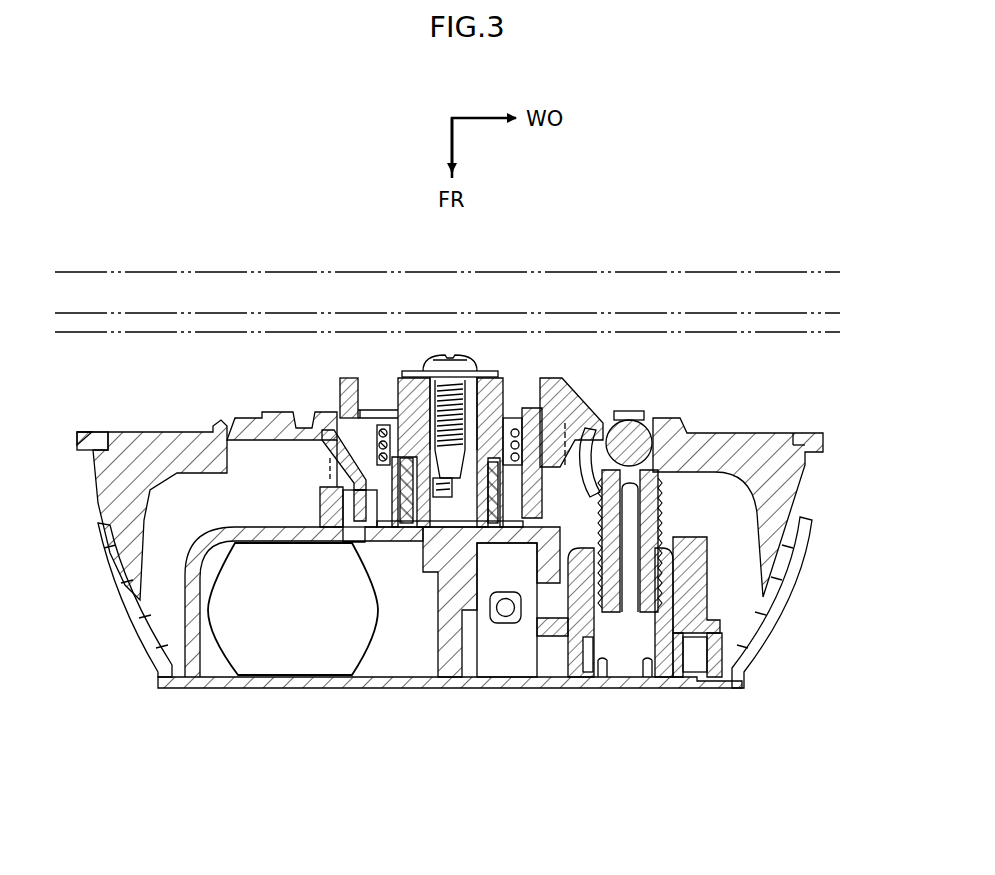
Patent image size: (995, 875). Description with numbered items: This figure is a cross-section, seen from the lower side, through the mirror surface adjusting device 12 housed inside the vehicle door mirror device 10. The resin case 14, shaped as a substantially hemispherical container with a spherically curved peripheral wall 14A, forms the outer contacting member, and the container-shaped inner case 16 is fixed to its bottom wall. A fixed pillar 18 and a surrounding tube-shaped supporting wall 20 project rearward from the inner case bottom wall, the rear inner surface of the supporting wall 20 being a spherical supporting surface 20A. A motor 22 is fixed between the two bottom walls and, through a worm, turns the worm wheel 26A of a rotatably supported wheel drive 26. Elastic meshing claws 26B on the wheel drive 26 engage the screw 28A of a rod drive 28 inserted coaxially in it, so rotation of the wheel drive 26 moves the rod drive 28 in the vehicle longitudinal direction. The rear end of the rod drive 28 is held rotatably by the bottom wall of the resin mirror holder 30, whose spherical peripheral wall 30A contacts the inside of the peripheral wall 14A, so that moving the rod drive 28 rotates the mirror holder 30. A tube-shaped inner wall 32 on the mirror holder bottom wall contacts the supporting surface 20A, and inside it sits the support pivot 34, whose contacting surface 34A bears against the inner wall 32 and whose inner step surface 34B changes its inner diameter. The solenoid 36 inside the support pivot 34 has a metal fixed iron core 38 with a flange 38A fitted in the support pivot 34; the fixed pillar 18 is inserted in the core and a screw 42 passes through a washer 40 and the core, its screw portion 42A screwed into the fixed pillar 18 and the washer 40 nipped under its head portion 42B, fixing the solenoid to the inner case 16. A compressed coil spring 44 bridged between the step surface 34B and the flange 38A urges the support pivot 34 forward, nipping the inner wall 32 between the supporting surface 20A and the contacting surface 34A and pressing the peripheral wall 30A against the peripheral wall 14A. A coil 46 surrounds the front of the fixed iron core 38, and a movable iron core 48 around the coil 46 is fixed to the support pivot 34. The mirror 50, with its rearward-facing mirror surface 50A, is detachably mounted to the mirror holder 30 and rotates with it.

The vehicle door mirror device 10 is at (245, 152).
The mirror surface adjusting device 12 is at (95, 396).
The case 14 is at (504, 690).
The peripheral wall 14A is at (117, 611).
The inner case 16 is at (208, 530).
The fixed pillar 18 is at (427, 402).
The supporting wall 20 is at (586, 430).
The supporting surface 20A is at (330, 472).
The motor 22 is at (376, 633).
The wheel drive 26 is at (710, 572).
The worm wheel 26A is at (534, 615).
The meshing claw 26B is at (660, 542).
The rod drive 28 is at (687, 427).
The screw 28A is at (652, 512).
The mirror holder 30 is at (152, 428).
The peripheral wall 30A is at (806, 480).
The inner wall 32 is at (300, 410).
The support pivot 34 is at (560, 390).
The contacting surface 34A is at (352, 478).
The step surface 34B is at (326, 458).
The solenoid 36 is at (390, 370).
The fixed iron core 38 is at (508, 372).
The flange 38A is at (352, 408).
The washer 40 is at (420, 370).
The screw 42 is at (430, 356).
The screw portion 42A is at (378, 432).
The head portion 42B is at (470, 370).
The coil spring 44 is at (502, 415).
The coil 46 is at (407, 532).
The movable iron core 48 is at (509, 528).
The mirror 50 is at (218, 270).
The mirror surface 50A is at (736, 295).